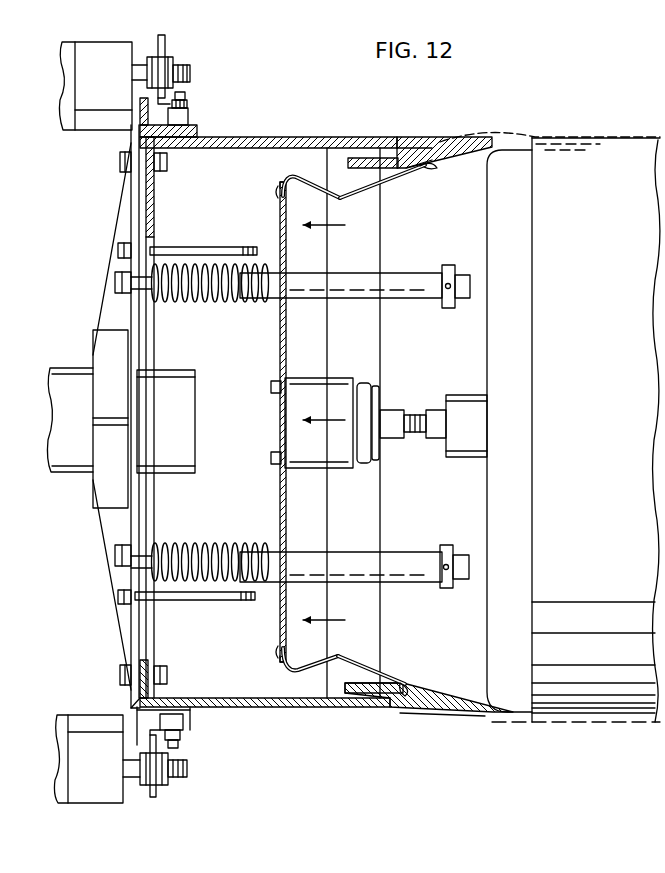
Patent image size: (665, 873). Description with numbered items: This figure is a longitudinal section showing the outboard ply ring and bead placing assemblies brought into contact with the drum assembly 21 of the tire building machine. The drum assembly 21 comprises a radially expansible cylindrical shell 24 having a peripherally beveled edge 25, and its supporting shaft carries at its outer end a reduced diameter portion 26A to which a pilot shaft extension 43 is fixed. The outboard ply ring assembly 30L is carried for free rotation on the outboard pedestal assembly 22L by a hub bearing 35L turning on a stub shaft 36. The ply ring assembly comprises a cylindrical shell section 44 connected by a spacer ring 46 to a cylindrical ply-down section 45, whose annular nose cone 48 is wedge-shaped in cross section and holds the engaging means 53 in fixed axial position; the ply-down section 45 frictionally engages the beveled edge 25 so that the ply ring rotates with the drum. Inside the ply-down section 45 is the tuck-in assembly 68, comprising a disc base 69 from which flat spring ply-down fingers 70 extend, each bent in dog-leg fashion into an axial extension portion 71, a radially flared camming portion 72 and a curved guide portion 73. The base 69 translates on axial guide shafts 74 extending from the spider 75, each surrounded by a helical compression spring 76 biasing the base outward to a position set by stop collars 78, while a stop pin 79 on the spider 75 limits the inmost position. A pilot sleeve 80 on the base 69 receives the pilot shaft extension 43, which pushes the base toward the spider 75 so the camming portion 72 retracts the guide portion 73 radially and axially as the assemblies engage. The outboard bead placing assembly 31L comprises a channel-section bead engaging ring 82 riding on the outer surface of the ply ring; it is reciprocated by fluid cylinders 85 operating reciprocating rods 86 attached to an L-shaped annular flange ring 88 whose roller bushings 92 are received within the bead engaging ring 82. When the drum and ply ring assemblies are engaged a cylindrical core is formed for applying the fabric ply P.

The drum assembly 21 is at (486, 230).
The outboard pedestal assembly 22L is at (230, 63).
The radially expansible cylindrical shell 24 is at (608, 140).
The peripherally beveled edge 25 is at (488, 192).
The reduced diameter portion of shaft 26A is at (461, 404).
The outboard ply ring assembly 30L is at (270, 136).
The outboard bead placing assembly 31L is at (172, 62).
The hub bearing 35L is at (100, 346).
The stub shaft 36 is at (45, 405).
The pilot shaft extension 43 is at (381, 396).
The cylindrical shell section 44 is at (300, 141).
The cylindrical ply-down section 45 is at (462, 135).
The spacer ring 46 is at (355, 146).
The annular nose cone 48 is at (412, 139).
The engaging means 53 is at (487, 719).
The tuck-in assembly 68 is at (272, 478).
The disc base 69 is at (279, 342).
The flat spring ply-down finger 70 is at (331, 197).
The axial extension portion 71 is at (320, 178).
The radially flared camming portion 72 is at (372, 186).
The curved guide portion 73 is at (404, 168).
The axial guide shaft 74 is at (417, 275).
The spider 75 is at (106, 306).
The helical compression spring 76 is at (222, 303).
The stop collar 78 is at (449, 268).
The stop pin 79 is at (225, 253).
The pilot sleeve 80 is at (331, 383).
The bead engaging ring 82 is at (189, 111).
The fluid cylinder 85 is at (101, 54).
The reciprocating rod 86 is at (191, 73).
The annular flange ring 88 is at (164, 47).
The roller bushing 92 is at (189, 117).
The fabric ply P is at (472, 136).